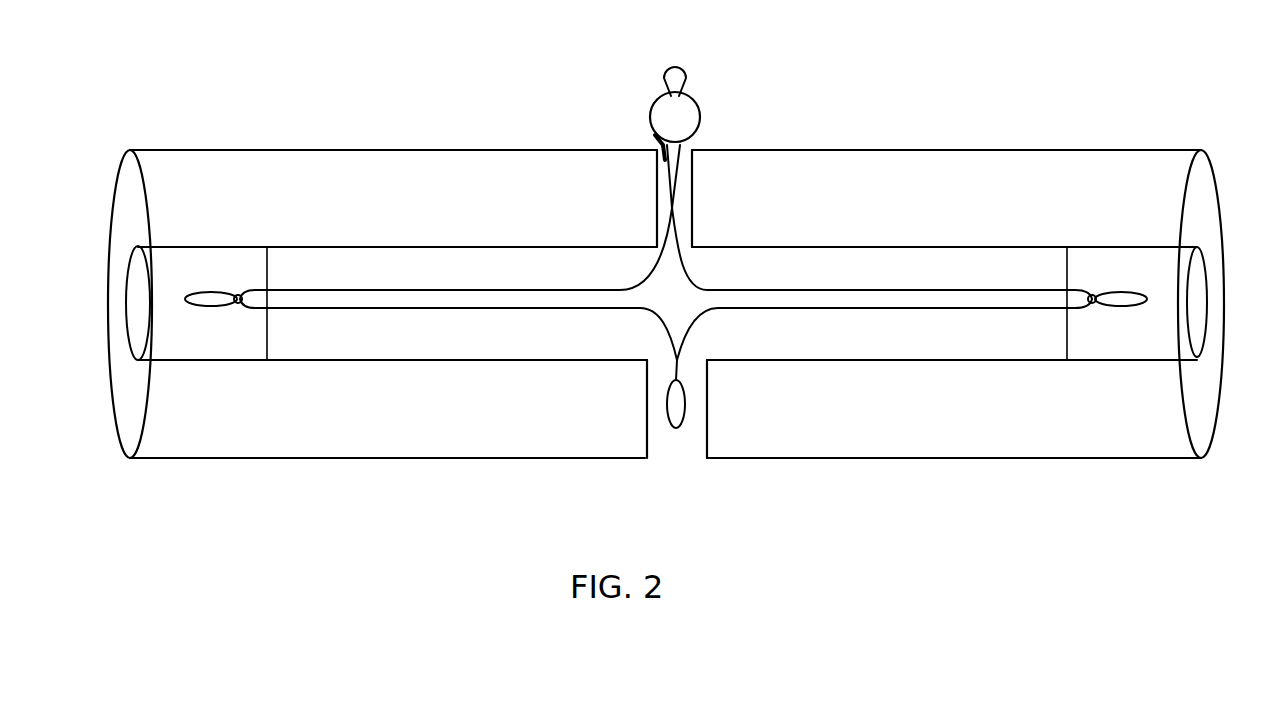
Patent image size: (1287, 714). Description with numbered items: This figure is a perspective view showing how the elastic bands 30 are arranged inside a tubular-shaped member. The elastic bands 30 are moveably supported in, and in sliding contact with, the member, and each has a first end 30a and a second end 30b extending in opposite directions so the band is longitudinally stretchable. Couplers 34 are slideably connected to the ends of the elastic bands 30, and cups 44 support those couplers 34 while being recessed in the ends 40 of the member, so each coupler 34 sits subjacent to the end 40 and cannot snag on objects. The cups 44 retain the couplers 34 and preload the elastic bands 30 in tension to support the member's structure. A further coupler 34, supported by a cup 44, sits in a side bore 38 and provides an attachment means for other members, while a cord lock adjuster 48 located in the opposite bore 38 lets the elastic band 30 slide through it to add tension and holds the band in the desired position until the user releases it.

The elastic band 30 is at (505, 311).
The first end of tubular member 30a is at (264, 291).
The second end of tubular member 30b is at (1082, 294).
The coupler 34 is at (192, 292).
The side bore 38 is at (655, 135).
The end of the tubular-shaped member 40 is at (128, 426).
The cup 44 is at (130, 329).
The cord lock adjuster 48 is at (688, 110).